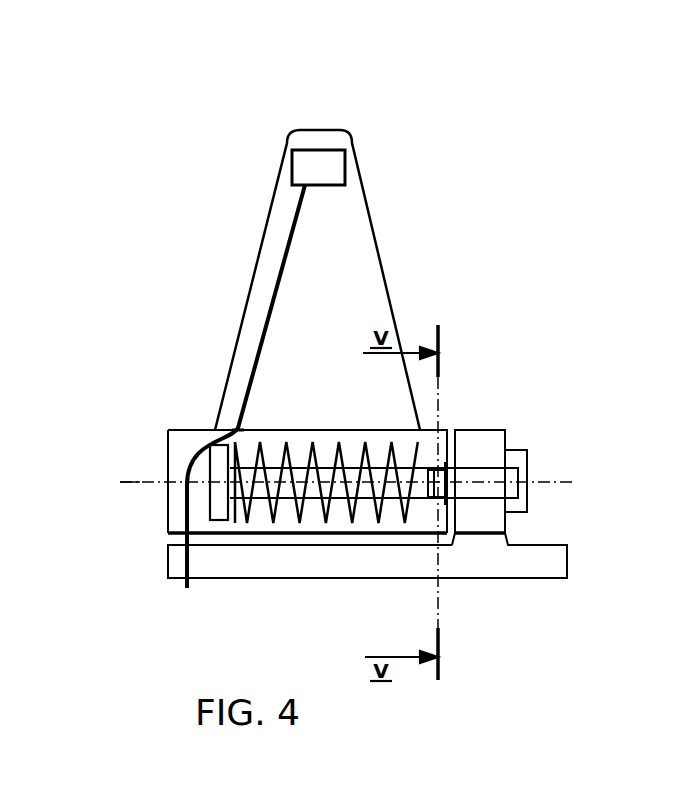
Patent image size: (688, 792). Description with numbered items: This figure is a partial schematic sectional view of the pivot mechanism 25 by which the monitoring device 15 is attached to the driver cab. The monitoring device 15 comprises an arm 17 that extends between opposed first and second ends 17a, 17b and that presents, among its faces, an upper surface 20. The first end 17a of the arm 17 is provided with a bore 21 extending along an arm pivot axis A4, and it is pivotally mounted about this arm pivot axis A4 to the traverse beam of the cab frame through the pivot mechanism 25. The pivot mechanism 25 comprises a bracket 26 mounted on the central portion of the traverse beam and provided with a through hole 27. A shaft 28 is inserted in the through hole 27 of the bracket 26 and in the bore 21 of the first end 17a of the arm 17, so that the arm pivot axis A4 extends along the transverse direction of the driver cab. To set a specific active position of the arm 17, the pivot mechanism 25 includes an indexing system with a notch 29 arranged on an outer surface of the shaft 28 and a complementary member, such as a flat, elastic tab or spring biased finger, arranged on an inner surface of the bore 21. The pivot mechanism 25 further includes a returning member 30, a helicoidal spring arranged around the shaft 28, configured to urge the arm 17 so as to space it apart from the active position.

The monitoring device 15 is at (516, 278).
The arm 17 is at (243, 160).
The first end 17a is at (313, 132).
The second end 17b is at (167, 510).
The upper surface 20 is at (348, 260).
The bore 21 is at (237, 428).
The pivot mechanism 25 is at (397, 494).
The bracket 26 is at (515, 562).
The through hole 27 is at (478, 465).
The shaft 28 is at (418, 490).
The notch 29 is at (445, 440).
The returning member 30 is at (298, 512).
The arm pivot axis A4 is at (561, 482).